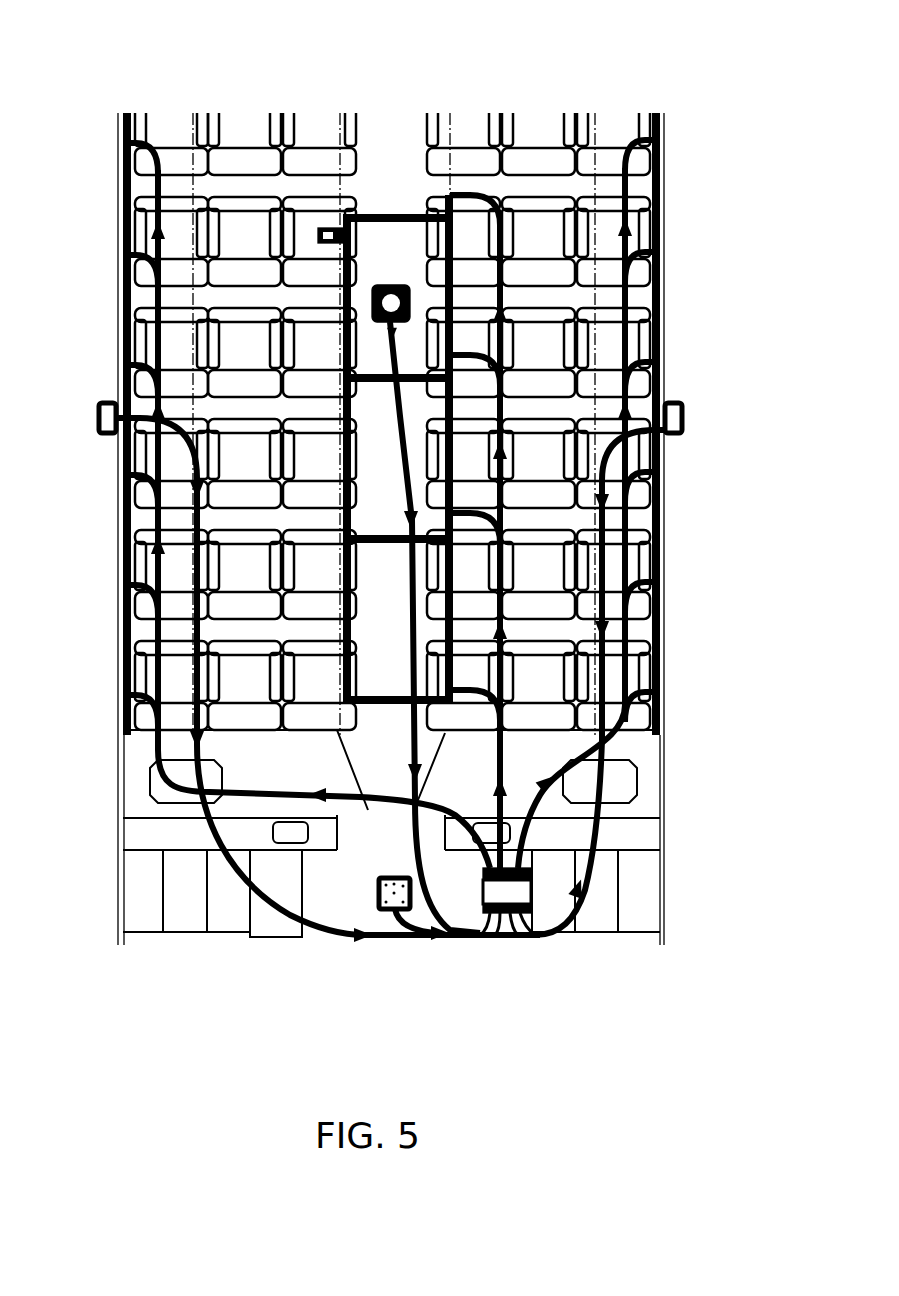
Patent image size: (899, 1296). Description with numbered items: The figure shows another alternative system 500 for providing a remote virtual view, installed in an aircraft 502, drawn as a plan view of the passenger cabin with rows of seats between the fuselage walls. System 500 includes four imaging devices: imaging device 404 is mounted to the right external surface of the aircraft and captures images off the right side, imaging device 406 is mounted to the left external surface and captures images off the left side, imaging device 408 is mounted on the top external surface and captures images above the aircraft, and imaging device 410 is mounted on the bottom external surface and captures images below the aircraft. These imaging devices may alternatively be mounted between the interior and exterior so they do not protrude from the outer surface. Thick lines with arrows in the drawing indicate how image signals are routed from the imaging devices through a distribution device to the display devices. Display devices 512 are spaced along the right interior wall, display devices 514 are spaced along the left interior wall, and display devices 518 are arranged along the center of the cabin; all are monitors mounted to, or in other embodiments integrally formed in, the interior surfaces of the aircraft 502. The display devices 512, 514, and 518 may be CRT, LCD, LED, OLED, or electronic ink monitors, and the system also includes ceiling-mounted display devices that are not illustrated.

The system 500 is at (128, 52).
The aircraft 502 is at (668, 124).
The imaging device 404 is at (688, 416).
The imaging device 406 is at (105, 433).
The imaging device 408 is at (396, 285).
The imaging device 410 is at (377, 892).
The display device 512 is at (665, 196).
The display device 514 is at (120, 203).
The display device 518 is at (400, 252).